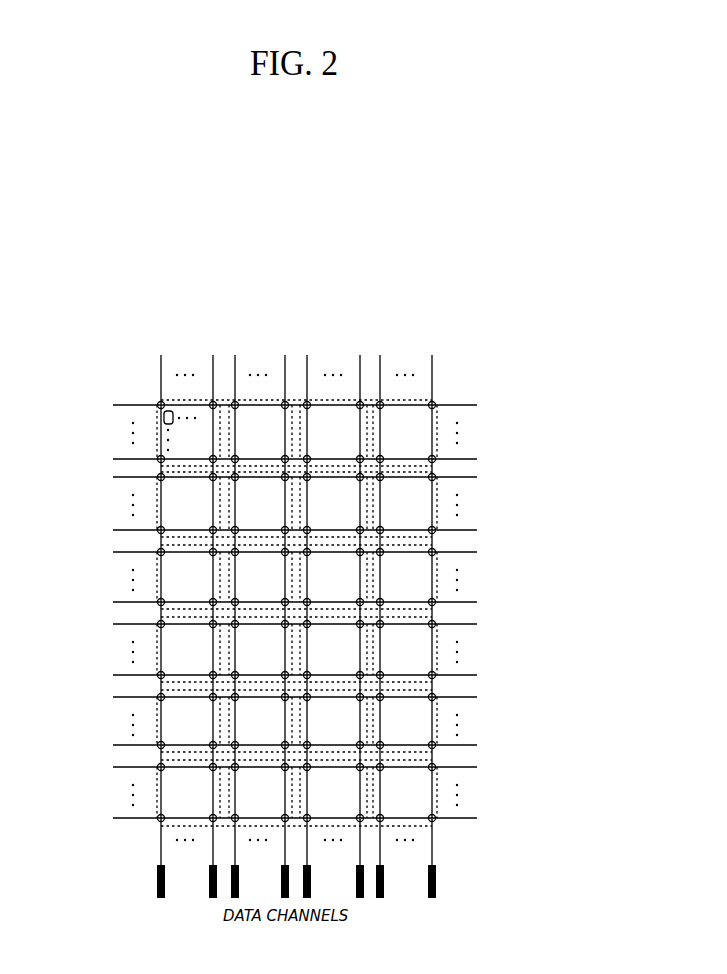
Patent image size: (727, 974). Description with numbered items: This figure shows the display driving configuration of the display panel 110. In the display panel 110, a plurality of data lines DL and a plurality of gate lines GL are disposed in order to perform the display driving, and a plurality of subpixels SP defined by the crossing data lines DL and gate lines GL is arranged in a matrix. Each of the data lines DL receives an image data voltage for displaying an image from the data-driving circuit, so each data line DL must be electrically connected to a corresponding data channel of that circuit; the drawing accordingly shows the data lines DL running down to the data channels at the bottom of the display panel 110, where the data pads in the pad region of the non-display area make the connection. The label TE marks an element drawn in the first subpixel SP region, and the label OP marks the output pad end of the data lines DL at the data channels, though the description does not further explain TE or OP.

The display panel 110 is at (86, 215).
The data lines DL is at (432, 322).
The gate lines GL is at (513, 818).
The subpixels SP is at (160, 414).
The touch electrode TE is at (435, 420).
The output pads OP is at (437, 887).